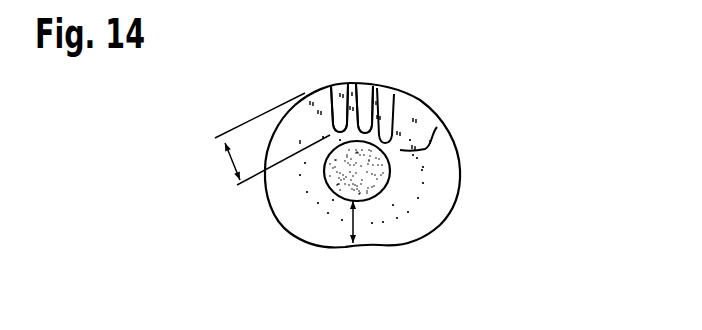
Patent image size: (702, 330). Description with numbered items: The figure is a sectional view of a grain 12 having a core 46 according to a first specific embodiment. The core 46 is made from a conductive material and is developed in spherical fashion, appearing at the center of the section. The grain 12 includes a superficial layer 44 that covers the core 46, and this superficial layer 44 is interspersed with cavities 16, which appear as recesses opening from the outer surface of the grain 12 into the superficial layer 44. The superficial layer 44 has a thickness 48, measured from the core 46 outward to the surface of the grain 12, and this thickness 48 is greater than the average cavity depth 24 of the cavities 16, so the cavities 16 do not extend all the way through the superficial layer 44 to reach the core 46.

The grain 12 is at (545, 79).
The cavities 16 is at (325, 83).
The average cavity depth 24 is at (232, 162).
The superficial layer 44 is at (437, 127).
The core 46 is at (355, 167).
The thickness 48 is at (352, 227).